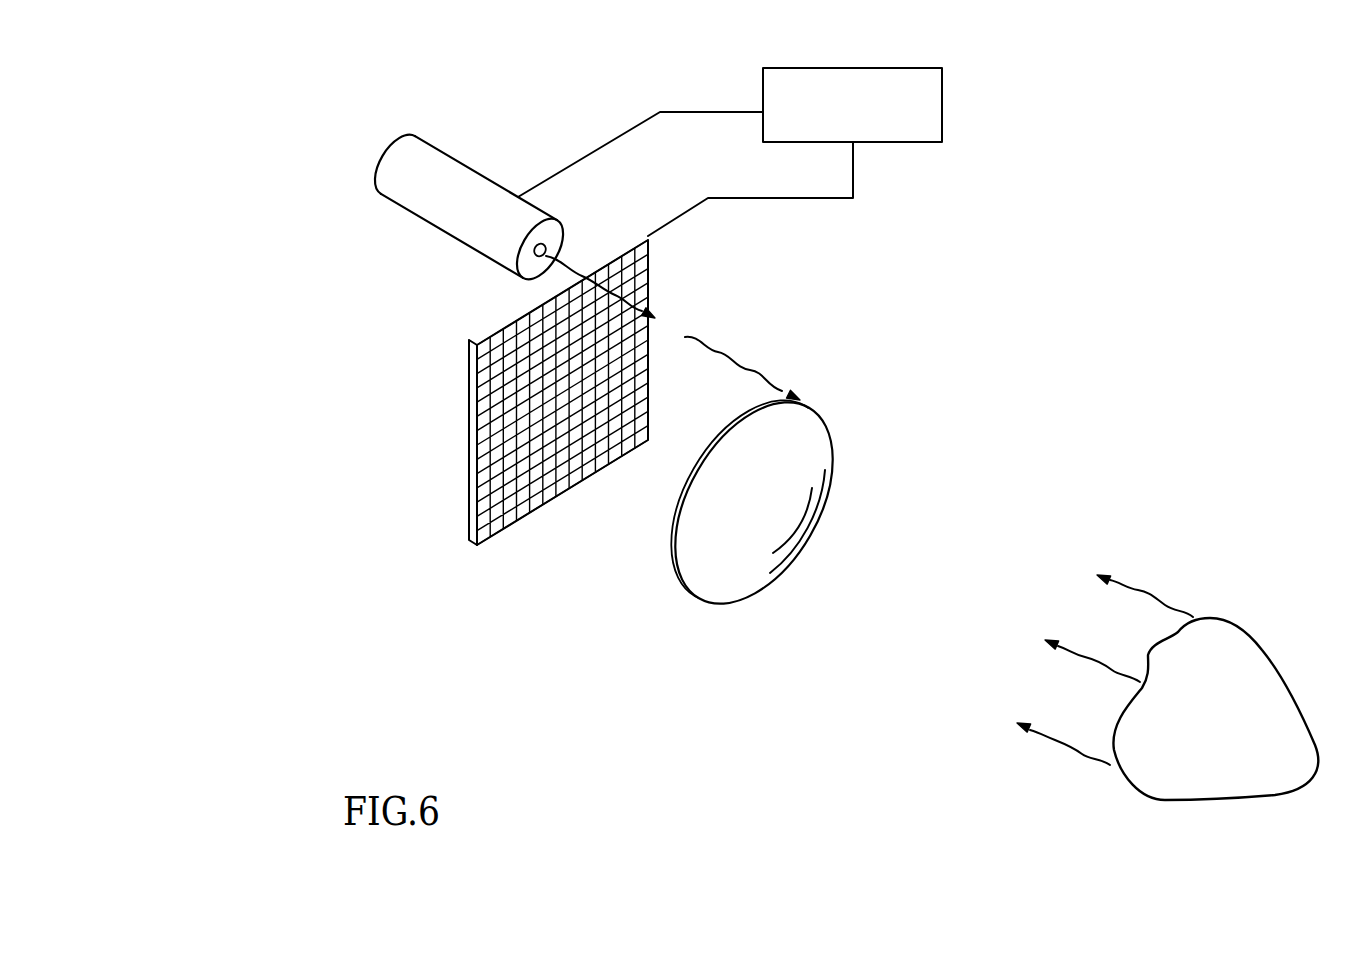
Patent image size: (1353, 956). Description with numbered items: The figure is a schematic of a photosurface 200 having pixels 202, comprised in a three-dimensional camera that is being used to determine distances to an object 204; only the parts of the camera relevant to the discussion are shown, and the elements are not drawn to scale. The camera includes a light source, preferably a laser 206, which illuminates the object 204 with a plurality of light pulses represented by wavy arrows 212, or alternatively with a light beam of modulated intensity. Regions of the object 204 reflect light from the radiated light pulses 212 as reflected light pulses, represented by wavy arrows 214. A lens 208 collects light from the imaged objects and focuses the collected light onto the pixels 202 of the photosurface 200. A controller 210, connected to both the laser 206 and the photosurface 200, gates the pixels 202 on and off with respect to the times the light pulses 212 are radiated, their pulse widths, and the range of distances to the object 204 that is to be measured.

The photosurface 200 is at (348, 368).
The pixels 202 is at (505, 482).
The object 204 is at (1227, 657).
The laser 206 is at (493, 183).
The lens 208 is at (677, 540).
The controller 210 is at (942, 110).
The light pulses 212 is at (733, 357).
The reflected light pulses 214 is at (1143, 587).